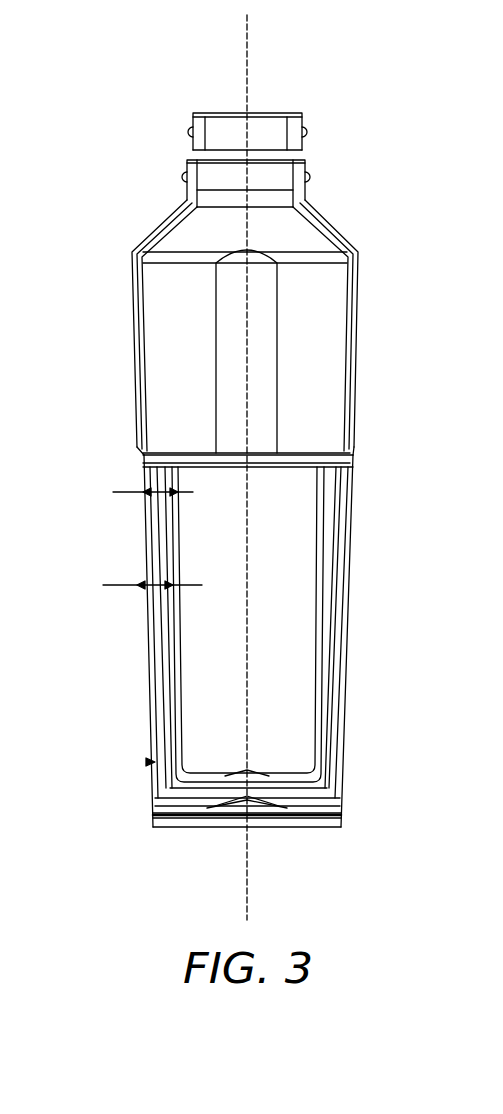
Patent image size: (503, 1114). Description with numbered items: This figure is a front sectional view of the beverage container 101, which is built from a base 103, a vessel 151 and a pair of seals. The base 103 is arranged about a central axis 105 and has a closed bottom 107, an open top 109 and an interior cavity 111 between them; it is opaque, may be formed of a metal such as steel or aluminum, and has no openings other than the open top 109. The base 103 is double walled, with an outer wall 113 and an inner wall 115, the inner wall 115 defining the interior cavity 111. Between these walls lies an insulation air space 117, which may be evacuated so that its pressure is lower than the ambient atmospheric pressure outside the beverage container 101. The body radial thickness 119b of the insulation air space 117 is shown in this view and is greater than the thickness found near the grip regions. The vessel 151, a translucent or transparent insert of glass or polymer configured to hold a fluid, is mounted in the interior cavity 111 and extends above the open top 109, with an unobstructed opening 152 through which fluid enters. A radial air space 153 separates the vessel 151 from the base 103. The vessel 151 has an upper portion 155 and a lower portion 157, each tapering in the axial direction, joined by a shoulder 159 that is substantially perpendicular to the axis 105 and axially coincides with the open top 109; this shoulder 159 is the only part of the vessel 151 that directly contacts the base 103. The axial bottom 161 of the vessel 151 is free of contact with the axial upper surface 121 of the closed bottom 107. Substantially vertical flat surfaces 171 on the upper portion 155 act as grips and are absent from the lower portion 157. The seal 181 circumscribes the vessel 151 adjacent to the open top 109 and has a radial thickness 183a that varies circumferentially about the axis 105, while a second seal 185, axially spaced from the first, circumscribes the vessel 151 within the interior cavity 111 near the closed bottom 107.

The beverage container 101 is at (150, 60).
The base 103 is at (98, 616).
The axis 105 is at (249, 46).
The closed bottom 107 is at (188, 820).
The open top 109 is at (355, 444).
The interior cavity 111 is at (350, 557).
The outer wall 113 is at (345, 661).
The inner wall 115 is at (345, 617).
The insulation air space 117 is at (159, 720).
The body radial thickness 119b is at (127, 586).
The axial upper surface 121 is at (274, 818).
The vessel 151 is at (100, 385).
The opening 152 is at (280, 112).
The radial air space 153 is at (145, 553).
The upper portion 155 is at (135, 353).
The lower portion 157 is at (212, 692).
The shoulder 159 is at (330, 456).
The axial bottom 161 is at (154, 798).
The substantially vertical flat surfaces 171 is at (232, 326).
The seal 181 is at (140, 440).
The radial thickness 183a is at (177, 495).
The second seal 185 is at (150, 762).